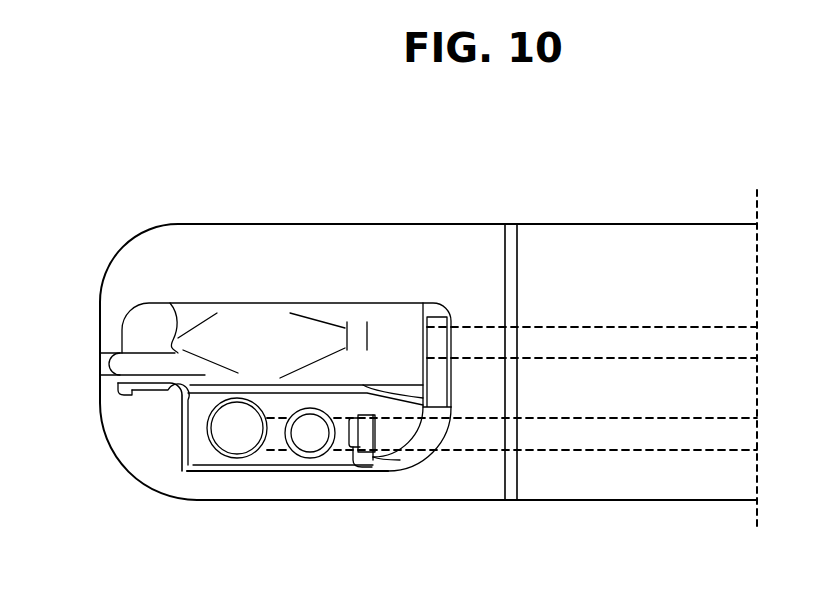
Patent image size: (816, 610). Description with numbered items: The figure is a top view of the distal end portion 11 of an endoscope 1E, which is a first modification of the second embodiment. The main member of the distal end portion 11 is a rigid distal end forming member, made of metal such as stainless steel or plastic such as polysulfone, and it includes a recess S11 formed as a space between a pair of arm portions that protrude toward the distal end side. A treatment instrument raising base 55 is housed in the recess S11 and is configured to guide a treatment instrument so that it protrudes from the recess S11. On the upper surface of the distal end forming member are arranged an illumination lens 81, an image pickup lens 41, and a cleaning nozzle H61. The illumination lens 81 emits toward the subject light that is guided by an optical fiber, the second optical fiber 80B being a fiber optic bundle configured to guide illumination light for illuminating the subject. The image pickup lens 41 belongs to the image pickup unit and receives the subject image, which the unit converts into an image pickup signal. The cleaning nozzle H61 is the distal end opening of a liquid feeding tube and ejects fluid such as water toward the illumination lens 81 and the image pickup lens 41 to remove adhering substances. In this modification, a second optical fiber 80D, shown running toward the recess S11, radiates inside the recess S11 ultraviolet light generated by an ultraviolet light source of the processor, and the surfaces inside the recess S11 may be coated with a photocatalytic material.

The endoscope 1E is at (68, 211).
The distal end portion 11 is at (112, 454).
The treatment instrument raising base 55 is at (170, 317).
The recess S11 is at (258, 308).
The second optical fiber 80D is at (627, 327).
The second optical fiber 80B is at (555, 452).
The illumination lens 81 is at (212, 458).
The image pickup lens 41 is at (292, 460).
The cleaning nozzle H61 is at (355, 460).